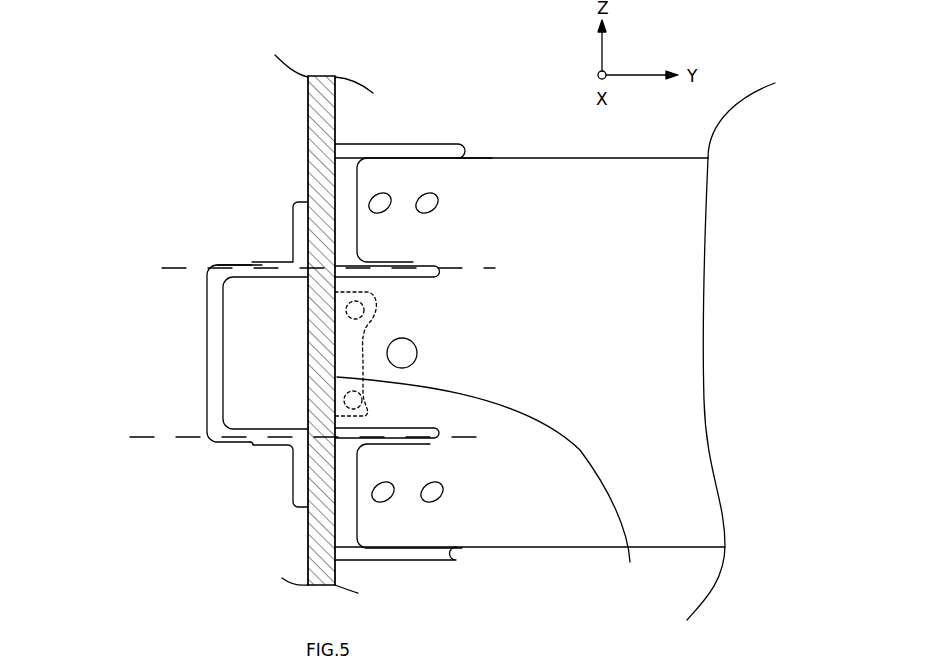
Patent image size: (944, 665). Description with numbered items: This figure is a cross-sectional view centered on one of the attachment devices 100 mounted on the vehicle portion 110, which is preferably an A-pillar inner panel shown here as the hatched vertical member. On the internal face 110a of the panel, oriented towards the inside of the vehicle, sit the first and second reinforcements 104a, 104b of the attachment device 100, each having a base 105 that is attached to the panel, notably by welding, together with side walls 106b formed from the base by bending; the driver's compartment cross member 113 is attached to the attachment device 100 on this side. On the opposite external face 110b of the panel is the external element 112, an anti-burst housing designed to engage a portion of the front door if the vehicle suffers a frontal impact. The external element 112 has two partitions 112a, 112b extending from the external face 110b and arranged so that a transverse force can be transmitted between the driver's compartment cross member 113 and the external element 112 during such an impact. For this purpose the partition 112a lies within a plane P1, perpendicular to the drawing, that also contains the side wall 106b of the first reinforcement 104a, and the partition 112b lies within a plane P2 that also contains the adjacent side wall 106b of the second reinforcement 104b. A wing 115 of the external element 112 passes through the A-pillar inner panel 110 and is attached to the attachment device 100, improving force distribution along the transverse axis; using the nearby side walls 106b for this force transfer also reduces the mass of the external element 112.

The attachment device 100 is at (432, 136).
The vehicle portion 110 is at (322, 108).
The internal face 110a is at (336, 127).
The external face 110b is at (308, 137).
The first reinforcement 104a is at (345, 191).
The second reinforcement 104b is at (356, 520).
The base 105 is at (308, 216).
The side wall 106b is at (413, 268).
The external element 112 is at (195, 343).
The partition 112a is at (262, 262).
The partition 112b is at (255, 445).
The driver's compartment cross member 113 is at (558, 507).
The wing 115 is at (493, 439).
The plane P1 is at (138, 268).
The plane P2 is at (151, 437).